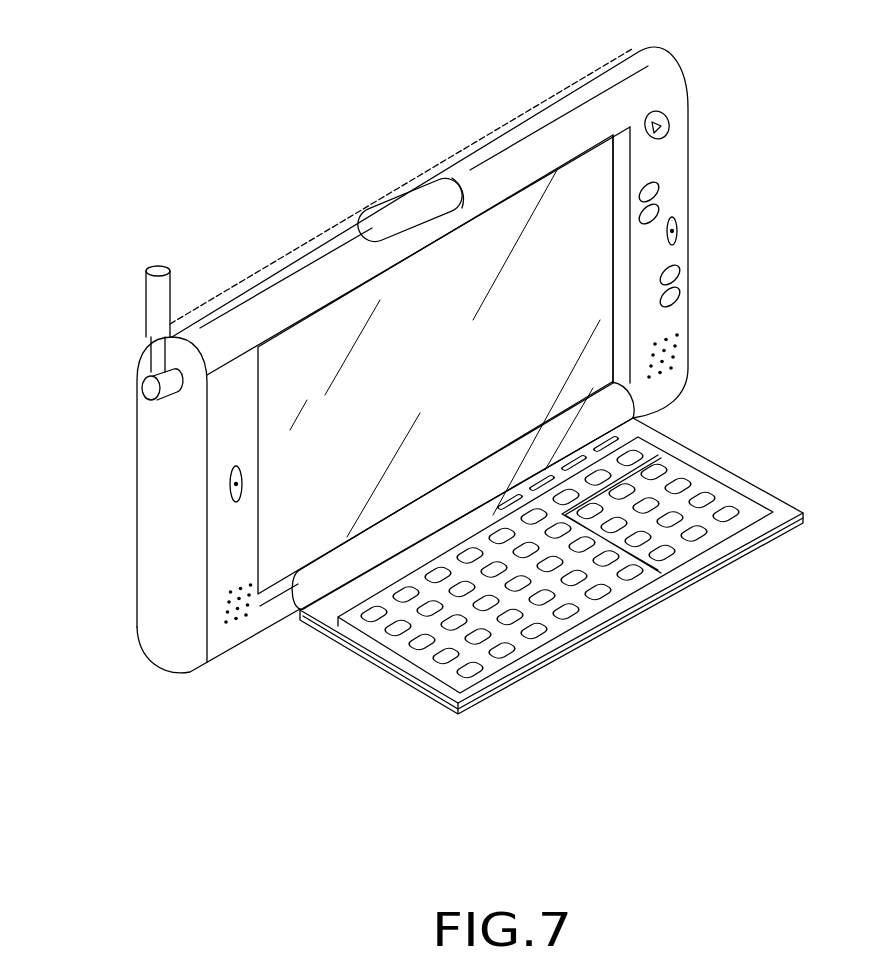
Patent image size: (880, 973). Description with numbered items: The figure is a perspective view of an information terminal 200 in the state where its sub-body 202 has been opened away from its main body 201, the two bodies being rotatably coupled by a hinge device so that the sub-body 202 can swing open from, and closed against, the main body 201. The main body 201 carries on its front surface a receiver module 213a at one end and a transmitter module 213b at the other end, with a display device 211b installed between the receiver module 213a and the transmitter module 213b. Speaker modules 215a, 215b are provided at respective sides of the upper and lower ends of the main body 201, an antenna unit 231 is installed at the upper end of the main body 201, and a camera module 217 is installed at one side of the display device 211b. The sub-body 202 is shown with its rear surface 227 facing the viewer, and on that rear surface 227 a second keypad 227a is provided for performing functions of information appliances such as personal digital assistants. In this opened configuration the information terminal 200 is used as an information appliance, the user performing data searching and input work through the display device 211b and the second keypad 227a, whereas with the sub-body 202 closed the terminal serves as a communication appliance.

The information terminal 200 is at (186, 25).
The main body 201 is at (247, 260).
The sub-body 202 is at (748, 464).
The display device 211b is at (598, 178).
The receiver module 213a is at (230, 486).
The transmitter module 213b is at (677, 232).
The speaker module 215a is at (685, 343).
The speaker module 215b is at (222, 612).
The camera module 217 is at (420, 200).
The rear surface 227 is at (397, 667).
The second keypad 227a is at (612, 593).
The antenna unit 231 is at (145, 287).